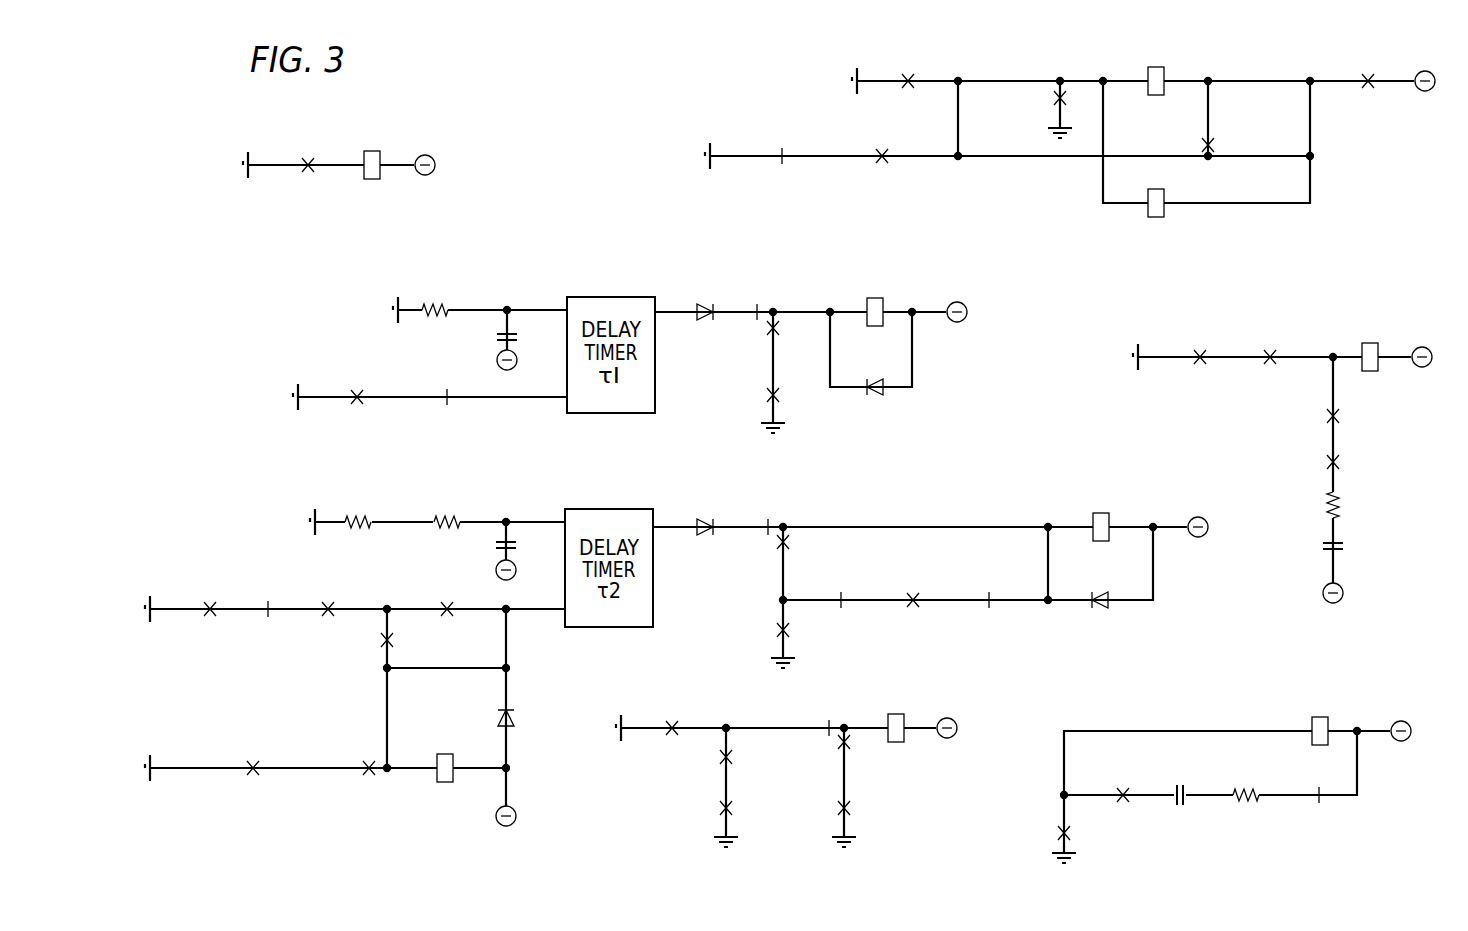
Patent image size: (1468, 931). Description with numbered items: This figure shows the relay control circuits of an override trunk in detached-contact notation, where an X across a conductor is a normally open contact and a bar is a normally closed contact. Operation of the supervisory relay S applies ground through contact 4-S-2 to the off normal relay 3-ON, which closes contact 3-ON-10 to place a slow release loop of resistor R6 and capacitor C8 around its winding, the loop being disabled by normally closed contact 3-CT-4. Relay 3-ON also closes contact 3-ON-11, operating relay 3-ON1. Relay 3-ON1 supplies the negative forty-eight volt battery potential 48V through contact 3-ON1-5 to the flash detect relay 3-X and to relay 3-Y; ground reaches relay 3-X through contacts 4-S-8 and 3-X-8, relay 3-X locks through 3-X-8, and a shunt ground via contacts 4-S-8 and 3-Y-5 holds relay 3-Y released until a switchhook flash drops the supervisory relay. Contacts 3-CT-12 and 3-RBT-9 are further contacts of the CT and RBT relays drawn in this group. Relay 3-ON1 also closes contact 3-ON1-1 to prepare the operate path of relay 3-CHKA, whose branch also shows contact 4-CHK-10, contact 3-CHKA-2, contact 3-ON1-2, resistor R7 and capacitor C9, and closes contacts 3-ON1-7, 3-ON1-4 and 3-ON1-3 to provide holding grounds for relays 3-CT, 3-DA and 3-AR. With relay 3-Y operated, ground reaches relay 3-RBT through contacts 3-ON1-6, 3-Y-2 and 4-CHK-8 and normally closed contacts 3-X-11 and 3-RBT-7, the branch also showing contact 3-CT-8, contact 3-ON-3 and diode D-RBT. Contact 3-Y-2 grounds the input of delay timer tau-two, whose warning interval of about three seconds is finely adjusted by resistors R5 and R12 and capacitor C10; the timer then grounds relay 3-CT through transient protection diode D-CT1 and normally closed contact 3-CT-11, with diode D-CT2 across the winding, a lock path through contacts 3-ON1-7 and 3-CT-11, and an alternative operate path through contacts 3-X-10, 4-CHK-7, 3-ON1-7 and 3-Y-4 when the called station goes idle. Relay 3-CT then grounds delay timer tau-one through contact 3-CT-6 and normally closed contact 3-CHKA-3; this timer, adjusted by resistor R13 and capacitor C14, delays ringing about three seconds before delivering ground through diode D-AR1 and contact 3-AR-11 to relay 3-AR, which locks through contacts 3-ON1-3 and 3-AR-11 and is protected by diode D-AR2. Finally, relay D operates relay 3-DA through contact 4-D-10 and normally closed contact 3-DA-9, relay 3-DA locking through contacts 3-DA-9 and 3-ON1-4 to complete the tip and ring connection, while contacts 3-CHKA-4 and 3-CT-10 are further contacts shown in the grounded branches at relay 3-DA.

The battery potential 48V is at (929, 449).
The ON1 relay 3-ON1 is at (372, 152).
The normally open contact 3-ON-11 is at (308, 178).
The normally open contact 4-S-8 is at (908, 68).
The contact 3-X-8 is at (1056, 90).
The relay CT contact 12 3-CT-12 is at (782, 145).
The relay RBT contact 9 3-RBT-9 is at (882, 168).
The flash detect relay 3-X is at (1156, 70).
The Y relay 3-Y is at (1156, 189).
The normally closed contact 3-Y-5 is at (1223, 170).
The normally open contact 3-ON1-5 is at (1368, 69).
The resistor R13 is at (435, 296).
The capacitor C14 is at (490, 335).
The normally open contact 3-CT-6 is at (357, 385).
The normally closed contact 3-CHKA-3 is at (447, 410).
The transient protection diode D-AR1 is at (705, 297).
The contact 3-AR-11 is at (766, 320).
The normally open contact 3-ON1-3 is at (736, 391).
The AR relay 3-AR is at (878, 300).
The diode D-AR2 is at (875, 372).
The normally open contact 3-ON1-1 is at (1200, 343).
The relay CHK contact 10 4-CHK-10 is at (1270, 370).
The CHKA relay 3-CHKA is at (1370, 343).
The relay CHKA contact 2 3-CHKA-2 is at (1286, 415).
The relay ON1 contact 2 3-ON1-2 is at (1296, 461).
The resistor R7 is at (1347, 503).
The capacitor C9 is at (1345, 546).
The resistor R12 is at (358, 508).
The resistor R5 is at (447, 508).
The capacitor C10 is at (523, 545).
The normally open contact 3-ON1-6 is at (210, 595).
The normally closed contact 3-X-11 is at (268, 623).
The normally open contact 3-Y-2 is at (328, 595).
The normally open contact 4-CHK-8 is at (447, 595).
The relay CT contact 8 3-CT-8 is at (421, 641).
The diode D-RBT is at (537, 718).
The normally closed contact 3-RBT-7 is at (372, 760).
The RBT relay 3-RBT is at (445, 755).
The relay ON contact 3 3-ON-3 is at (253, 780).
The transient protection diode D-CT1 is at (705, 513).
The contact 3-CT-11 is at (776, 535).
The normally open contact 3-ON1-7 is at (747, 628).
The normally closed contact 3-X-10 is at (841, 586).
The normally open contact 3-Y-4 is at (913, 612).
The normally closed contact 4-CHK-7 is at (985, 586).
The CT relay 3-CT is at (1105, 515).
The diode D-CT2 is at (1095, 587).
The normally open contact 4-D-10 is at (672, 714).
The relay CHKA contact 4 3-CHKA-4 is at (680, 755).
The relay CT contact 10 3-CT-10 is at (690, 808).
The contact 3-DA-9 is at (837, 735).
The normally open contact 3-ON1-4 is at (881, 808).
The DA relay 3-DA is at (896, 715).
The off normal relay 3-ON is at (1320, 718).
The normally open contact 3-ON-10 is at (1123, 780).
The capacitor C8 is at (1180, 808).
The resistor R6 is at (1246, 780).
The normally closed contact 3-CT-4 is at (1319, 809).
The normally open contact 4-S-2 is at (1036, 831).